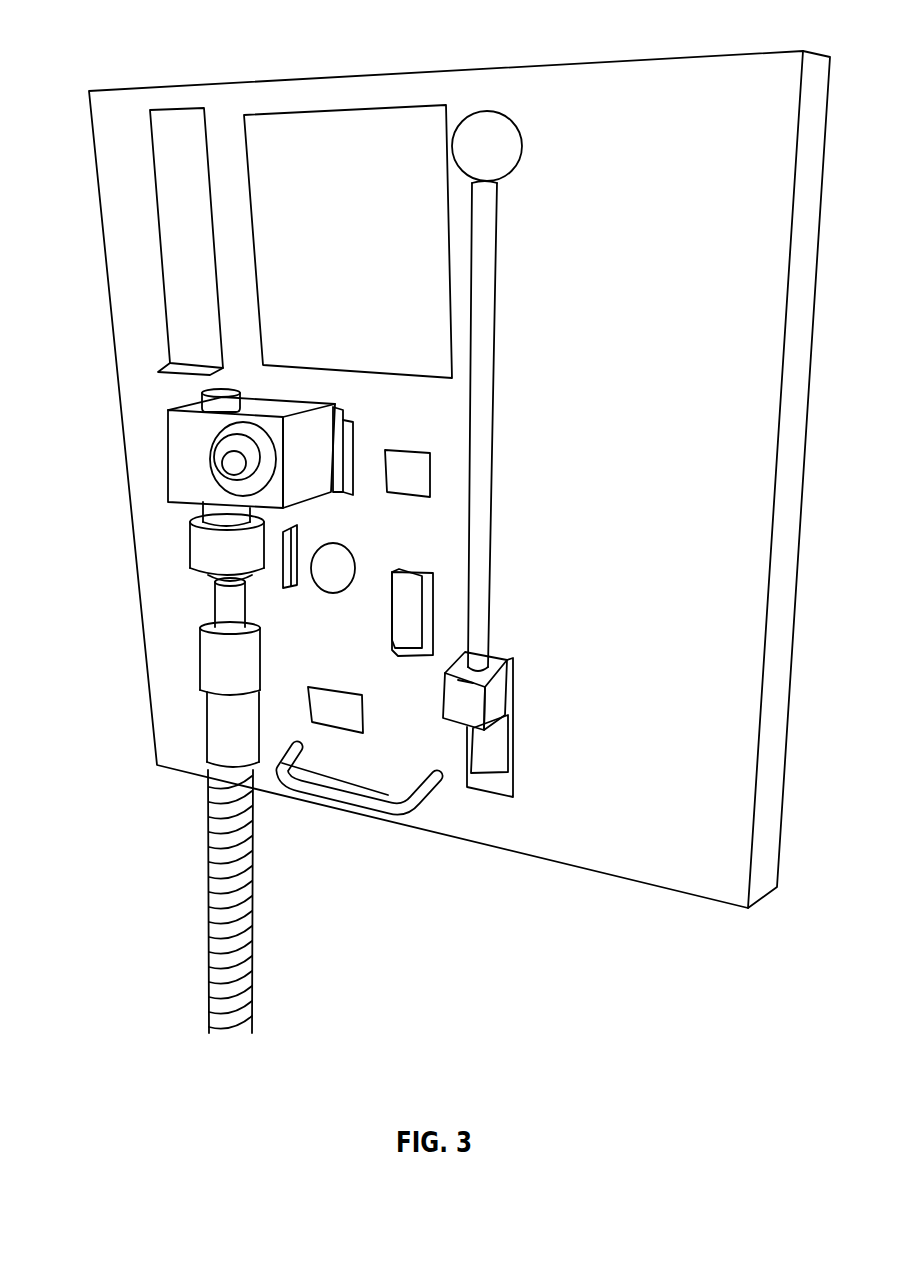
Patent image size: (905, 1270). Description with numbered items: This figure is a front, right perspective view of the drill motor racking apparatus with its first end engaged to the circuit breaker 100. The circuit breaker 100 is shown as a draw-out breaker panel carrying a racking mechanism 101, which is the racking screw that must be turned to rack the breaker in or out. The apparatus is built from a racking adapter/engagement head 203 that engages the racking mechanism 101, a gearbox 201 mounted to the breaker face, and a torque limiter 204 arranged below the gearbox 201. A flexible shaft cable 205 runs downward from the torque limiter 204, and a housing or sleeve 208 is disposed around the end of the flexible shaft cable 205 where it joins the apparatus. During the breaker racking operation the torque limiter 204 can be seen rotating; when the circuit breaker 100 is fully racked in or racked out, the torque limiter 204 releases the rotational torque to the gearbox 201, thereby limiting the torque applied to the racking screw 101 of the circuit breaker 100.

The circuit breaker 100 is at (633, 865).
The racking mechanism 101 is at (326, 615).
The gearbox 201 is at (183, 495).
The racking adapter/engagement head 203 is at (348, 438).
The torque limiter 204 is at (242, 550).
The flexible shaft cable 205 is at (198, 850).
The sleeve 208 is at (205, 717).